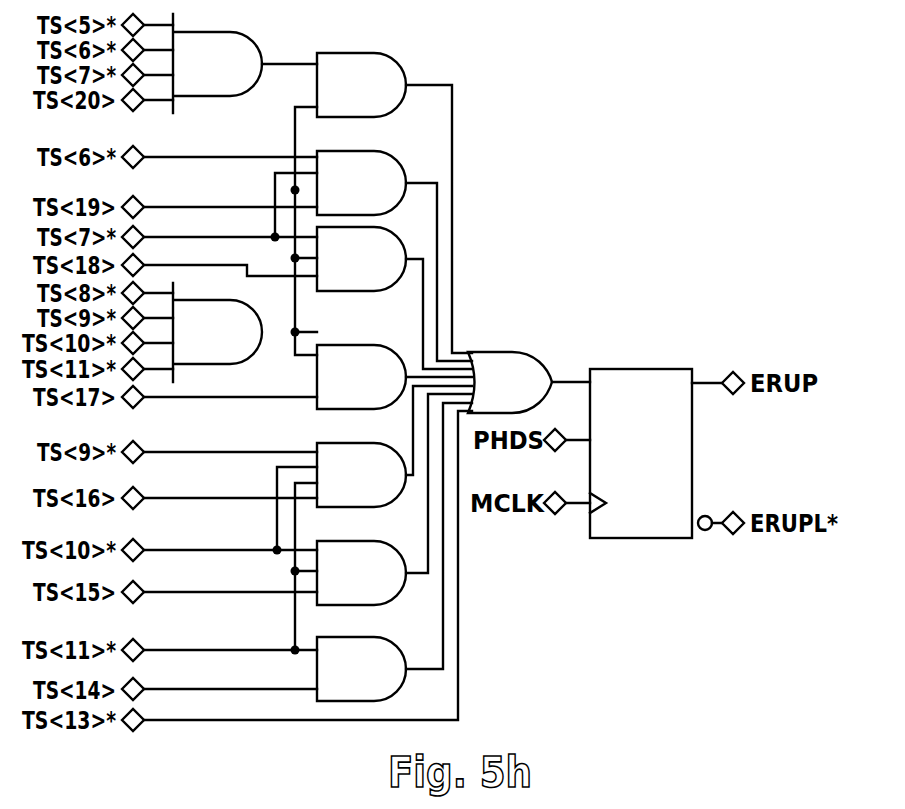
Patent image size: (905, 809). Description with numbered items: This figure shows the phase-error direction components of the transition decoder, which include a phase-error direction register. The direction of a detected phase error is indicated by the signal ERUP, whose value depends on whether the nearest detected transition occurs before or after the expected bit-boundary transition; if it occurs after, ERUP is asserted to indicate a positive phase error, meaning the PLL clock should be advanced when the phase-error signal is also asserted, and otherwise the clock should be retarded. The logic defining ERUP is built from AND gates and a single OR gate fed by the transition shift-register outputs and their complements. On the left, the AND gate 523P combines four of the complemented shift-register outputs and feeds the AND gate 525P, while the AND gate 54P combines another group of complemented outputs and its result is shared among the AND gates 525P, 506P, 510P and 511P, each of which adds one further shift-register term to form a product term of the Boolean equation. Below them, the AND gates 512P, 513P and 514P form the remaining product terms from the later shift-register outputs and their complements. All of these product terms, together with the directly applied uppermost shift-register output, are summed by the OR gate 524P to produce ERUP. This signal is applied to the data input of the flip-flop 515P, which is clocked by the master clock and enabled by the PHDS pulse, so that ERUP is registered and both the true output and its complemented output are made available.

The AND gate 523P is at (217, 63).
The AND gate 54P is at (217, 332).
The AND gate 525P is at (361, 85).
The AND gate 506P is at (361, 183).
The AND gate 510P is at (361, 259).
The AND gate 511P is at (361, 377).
The AND gate 512P is at (361, 475).
The AND gate 513P is at (361, 573).
The AND gate 514P is at (361, 669).
The OR gate 524P is at (510, 382).
The flip-flop 515P is at (651, 453).